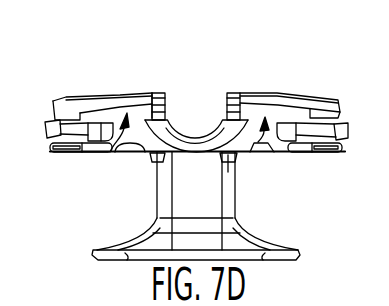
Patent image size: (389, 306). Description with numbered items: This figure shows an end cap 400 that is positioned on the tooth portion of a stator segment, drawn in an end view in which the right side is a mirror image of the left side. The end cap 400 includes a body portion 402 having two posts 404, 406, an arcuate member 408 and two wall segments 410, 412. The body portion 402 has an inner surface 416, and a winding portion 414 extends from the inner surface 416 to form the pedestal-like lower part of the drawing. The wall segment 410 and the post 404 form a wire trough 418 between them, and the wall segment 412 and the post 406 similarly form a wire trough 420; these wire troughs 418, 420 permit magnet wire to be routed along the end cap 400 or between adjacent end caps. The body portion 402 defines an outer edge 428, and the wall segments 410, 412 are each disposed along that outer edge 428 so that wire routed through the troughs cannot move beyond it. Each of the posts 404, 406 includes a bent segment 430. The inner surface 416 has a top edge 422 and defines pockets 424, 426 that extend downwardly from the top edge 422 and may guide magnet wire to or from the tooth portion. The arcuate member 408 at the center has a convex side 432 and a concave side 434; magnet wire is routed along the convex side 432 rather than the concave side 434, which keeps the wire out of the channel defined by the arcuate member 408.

The end cap 400 is at (232, 69).
The body portion 402 is at (165, 118).
The post 404 is at (87, 128).
The post 406 is at (296, 124).
The arcuate member 408 is at (178, 153).
The wall segment 410 is at (113, 100).
The wall segment 412 is at (276, 92).
The winding portion 414 is at (240, 238).
The inner surface 416 is at (321, 154).
The wire trough 418 is at (110, 152).
The wire trough 420 is at (275, 152).
The top edge 422 is at (230, 157).
The pocket 424 is at (125, 152).
The pocket 426 is at (262, 153).
The outer edge 428 is at (68, 97).
The bent segment 430 is at (45, 127).
The convex side 432 is at (125, 242).
The concave side 434 is at (203, 130).